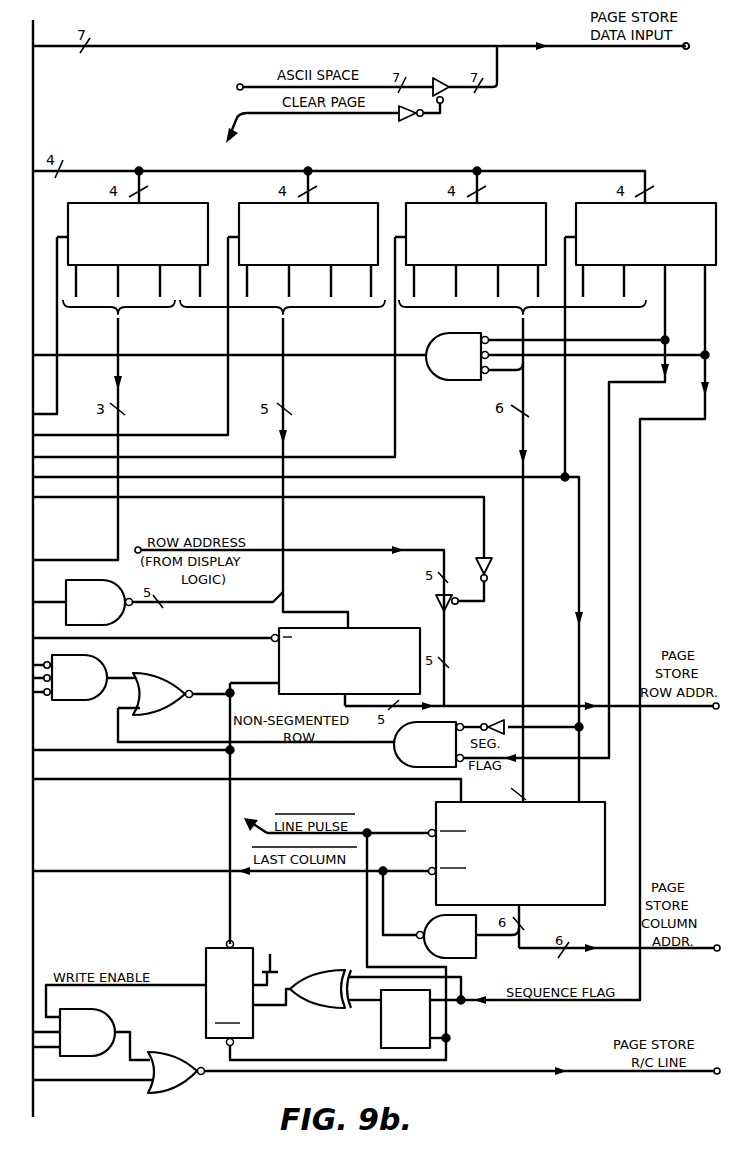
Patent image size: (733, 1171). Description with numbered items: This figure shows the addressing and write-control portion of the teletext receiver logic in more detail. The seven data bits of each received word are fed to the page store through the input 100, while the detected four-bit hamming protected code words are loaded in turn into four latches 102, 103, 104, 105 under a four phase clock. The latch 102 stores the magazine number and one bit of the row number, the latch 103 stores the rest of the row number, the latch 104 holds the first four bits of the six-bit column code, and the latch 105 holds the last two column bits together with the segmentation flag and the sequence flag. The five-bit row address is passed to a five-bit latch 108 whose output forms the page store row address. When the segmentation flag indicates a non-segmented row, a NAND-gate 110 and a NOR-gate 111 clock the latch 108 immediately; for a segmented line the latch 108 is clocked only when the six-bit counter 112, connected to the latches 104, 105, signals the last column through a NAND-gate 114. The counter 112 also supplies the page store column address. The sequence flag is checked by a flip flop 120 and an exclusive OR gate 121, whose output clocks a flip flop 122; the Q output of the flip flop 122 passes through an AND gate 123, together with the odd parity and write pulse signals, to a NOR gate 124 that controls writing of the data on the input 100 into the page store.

The input 100 is at (687, 53).
The latch 102 is at (168, 207).
The latch 103 is at (338, 207).
The latch 104 is at (509, 203).
The latch 105 is at (680, 203).
The 5-bit latch 108 is at (369, 630).
The NAND-gate 110 is at (406, 750).
The NOR-gate 111 is at (173, 672).
The 6-bit counter 112 is at (596, 802).
The NAND-gate 114 is at (98, 662).
The flip flop 120 is at (381, 1033).
The exclusive OR gate 121 is at (328, 963).
The flip flop 122 is at (213, 940).
The AND gate 123 is at (110, 1022).
The NOR gate 124 is at (175, 1042).